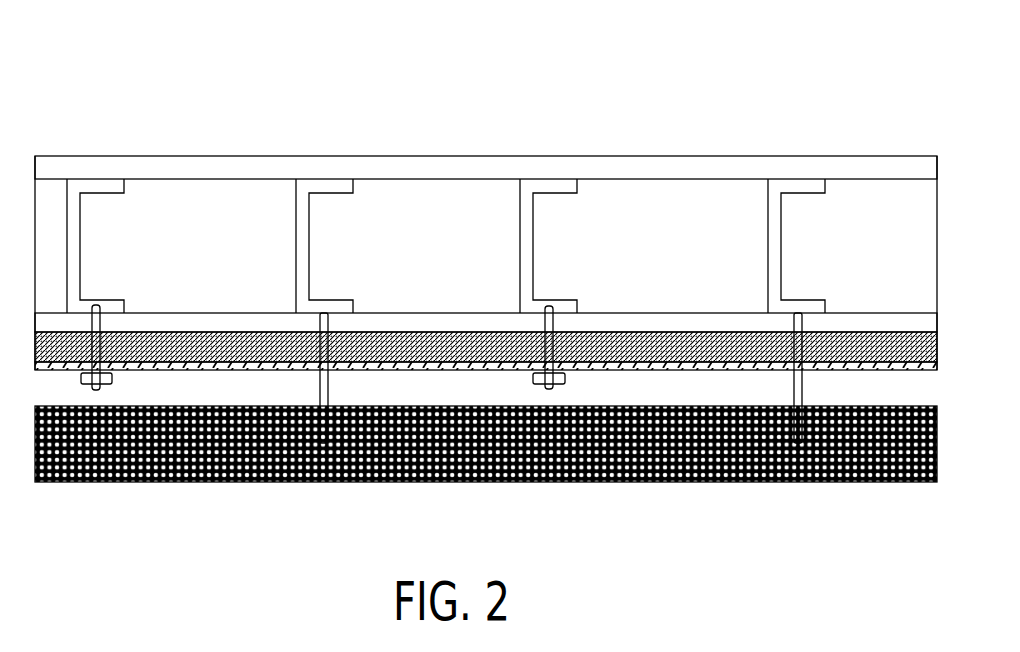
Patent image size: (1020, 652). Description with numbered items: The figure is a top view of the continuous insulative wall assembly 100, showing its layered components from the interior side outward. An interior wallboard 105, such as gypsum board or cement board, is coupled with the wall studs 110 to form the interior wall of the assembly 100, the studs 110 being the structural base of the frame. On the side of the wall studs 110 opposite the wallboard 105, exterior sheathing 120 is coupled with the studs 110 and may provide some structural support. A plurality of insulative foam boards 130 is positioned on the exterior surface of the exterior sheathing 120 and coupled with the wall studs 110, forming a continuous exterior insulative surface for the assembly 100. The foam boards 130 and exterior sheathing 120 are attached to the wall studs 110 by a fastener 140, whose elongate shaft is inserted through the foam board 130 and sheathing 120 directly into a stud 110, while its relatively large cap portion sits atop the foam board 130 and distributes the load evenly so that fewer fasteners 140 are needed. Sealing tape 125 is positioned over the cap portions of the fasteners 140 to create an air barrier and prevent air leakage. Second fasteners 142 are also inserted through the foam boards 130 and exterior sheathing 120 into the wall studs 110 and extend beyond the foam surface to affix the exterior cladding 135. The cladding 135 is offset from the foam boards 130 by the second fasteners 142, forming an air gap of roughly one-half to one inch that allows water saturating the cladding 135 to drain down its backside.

The continuous insulative wall assembly 100 is at (784, 93).
The interior wallboard 105 is at (73, 160).
The wall studs 110 is at (318, 182).
The exterior sheathing 120 is at (645, 323).
The sealing tape 125 is at (922, 367).
The insulative foam boards 130 is at (725, 332).
The exterior cladding 135 is at (118, 482).
The fastener 140 is at (100, 320).
The second fasteners 142 is at (320, 385).